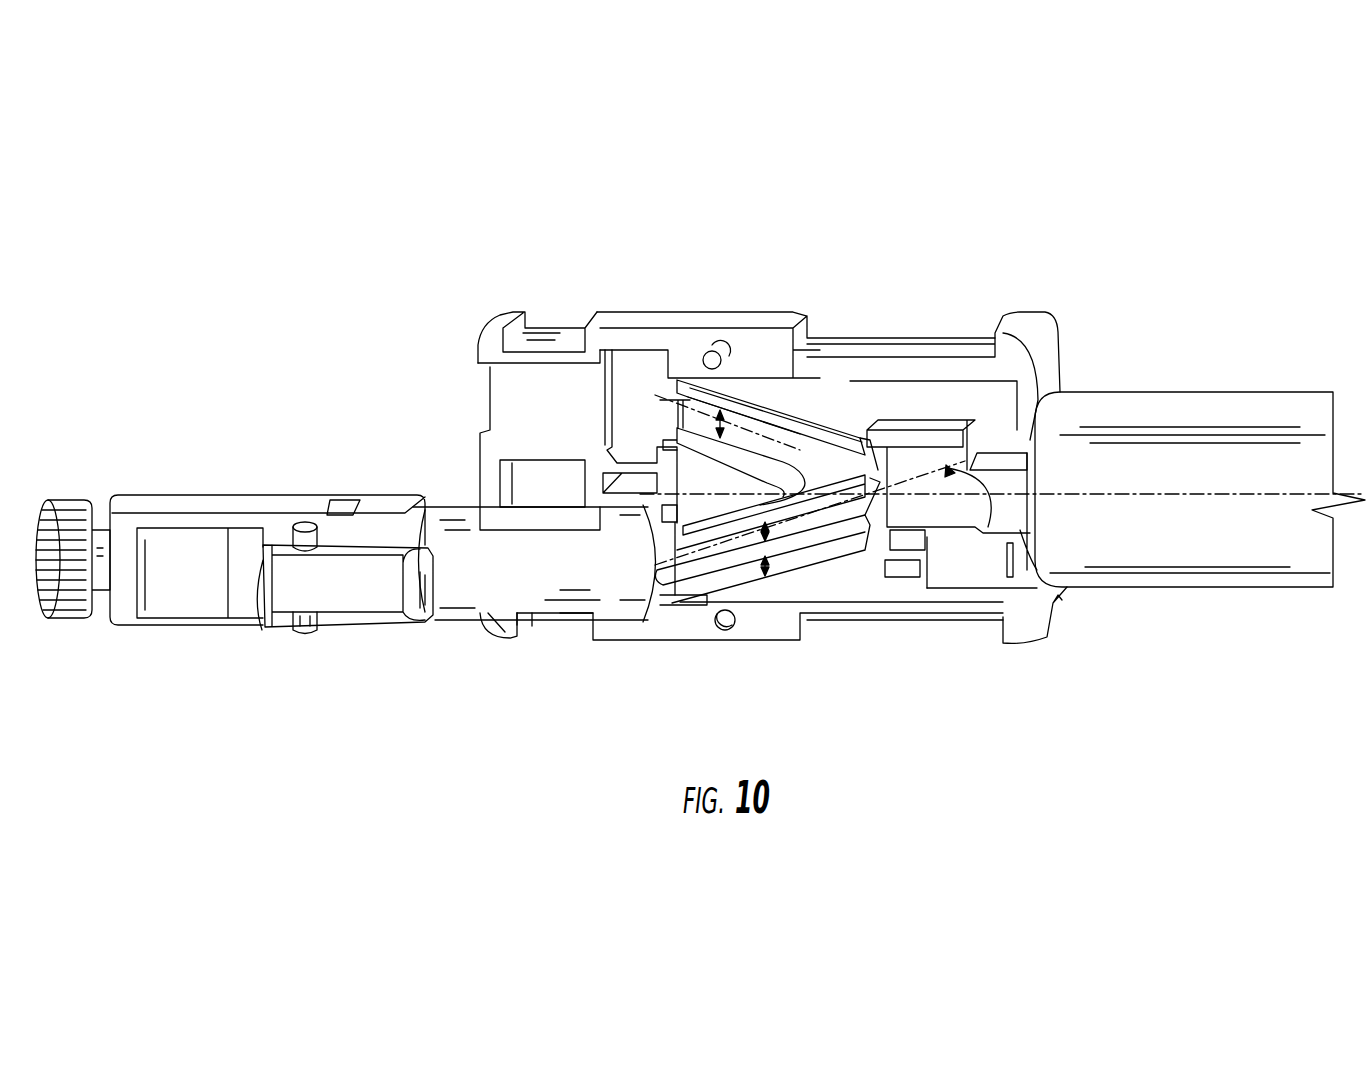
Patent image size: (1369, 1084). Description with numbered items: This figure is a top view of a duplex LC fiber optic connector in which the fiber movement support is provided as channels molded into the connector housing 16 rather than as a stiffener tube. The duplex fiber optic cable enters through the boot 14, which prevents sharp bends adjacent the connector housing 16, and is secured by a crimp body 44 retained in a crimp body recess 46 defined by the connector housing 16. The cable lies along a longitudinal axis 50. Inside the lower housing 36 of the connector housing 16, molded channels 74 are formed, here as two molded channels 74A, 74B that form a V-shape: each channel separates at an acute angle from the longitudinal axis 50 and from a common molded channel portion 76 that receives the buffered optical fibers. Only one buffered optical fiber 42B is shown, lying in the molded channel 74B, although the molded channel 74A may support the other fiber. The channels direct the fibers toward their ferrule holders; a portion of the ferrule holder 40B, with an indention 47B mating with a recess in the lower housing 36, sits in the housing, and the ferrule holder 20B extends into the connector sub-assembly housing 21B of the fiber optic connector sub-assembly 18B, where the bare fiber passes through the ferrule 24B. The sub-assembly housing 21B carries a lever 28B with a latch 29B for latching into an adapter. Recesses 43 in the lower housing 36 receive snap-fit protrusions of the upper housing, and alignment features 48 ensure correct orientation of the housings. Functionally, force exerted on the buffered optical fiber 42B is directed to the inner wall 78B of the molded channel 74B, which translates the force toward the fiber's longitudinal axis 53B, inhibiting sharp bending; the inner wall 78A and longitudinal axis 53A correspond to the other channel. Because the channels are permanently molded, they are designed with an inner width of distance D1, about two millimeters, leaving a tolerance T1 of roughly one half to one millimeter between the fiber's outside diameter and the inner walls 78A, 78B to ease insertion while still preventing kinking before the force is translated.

The boot 14 is at (1147, 393).
The connector housing 16 is at (803, 263).
The fiber optic connector sub-assembly 18B is at (271, 450).
The ferrule holder 20B is at (628, 625).
The connector sub-assembly housing 21B is at (188, 493).
The ferrule 24B is at (93, 500).
The lever 28B is at (451, 610).
The latch 29B is at (293, 632).
The lower housing 36 is at (725, 312).
The ferrule holder 40B is at (566, 620).
The buffered optical fiber 42B is at (880, 483).
The recesses 43 is at (552, 320).
The crimp body 44 is at (963, 475).
The crimp body recess 46 is at (1003, 460).
The indention 47B is at (517, 527).
The alignment features 48 is at (704, 348).
The longitudinal axis 50 is at (1137, 497).
The longitudinal axis 53A is at (777, 450).
The longitudinal axis 53B is at (707, 547).
The molded channels 74 is at (764, 392).
The molded channel 74A is at (770, 440).
The molded channel 74B is at (830, 507).
The common molded channel portion 76 is at (847, 453).
The inner wall 78A is at (807, 432).
The inner wall 78B is at (721, 523).
The inner width distance D1 is at (677, 407).
The tolerance T1 is at (803, 530).